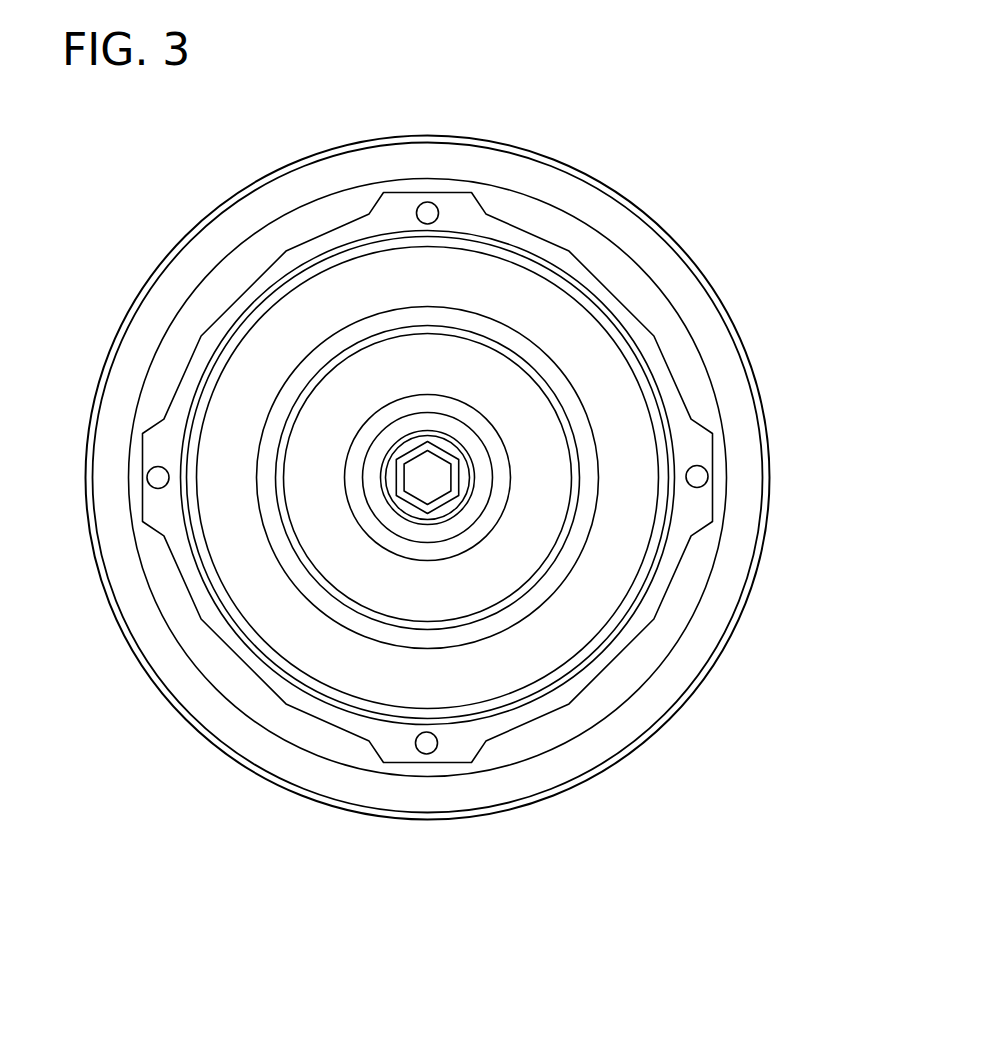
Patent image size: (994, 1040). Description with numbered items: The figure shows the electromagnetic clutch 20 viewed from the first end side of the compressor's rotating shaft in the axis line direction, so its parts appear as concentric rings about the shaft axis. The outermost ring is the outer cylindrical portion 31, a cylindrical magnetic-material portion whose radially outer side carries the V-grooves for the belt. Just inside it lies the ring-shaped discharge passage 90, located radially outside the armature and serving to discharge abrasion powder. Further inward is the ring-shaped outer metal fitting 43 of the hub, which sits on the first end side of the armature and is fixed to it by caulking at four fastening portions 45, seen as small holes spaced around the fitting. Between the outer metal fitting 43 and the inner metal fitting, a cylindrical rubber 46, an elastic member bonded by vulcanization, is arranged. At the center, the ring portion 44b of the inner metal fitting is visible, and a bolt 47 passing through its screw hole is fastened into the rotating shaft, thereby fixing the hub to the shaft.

The electromagnetic clutch 20 is at (157, 792).
The outer cylindrical portion 31 is at (700, 272).
The discharge passage 90 is at (612, 220).
The outer metal fitting 43 is at (165, 525).
The fastening portions 45 is at (431, 208).
The bolt 47 is at (317, 648).
The ring portion 44b is at (382, 585).
The rubber 46 is at (418, 488).